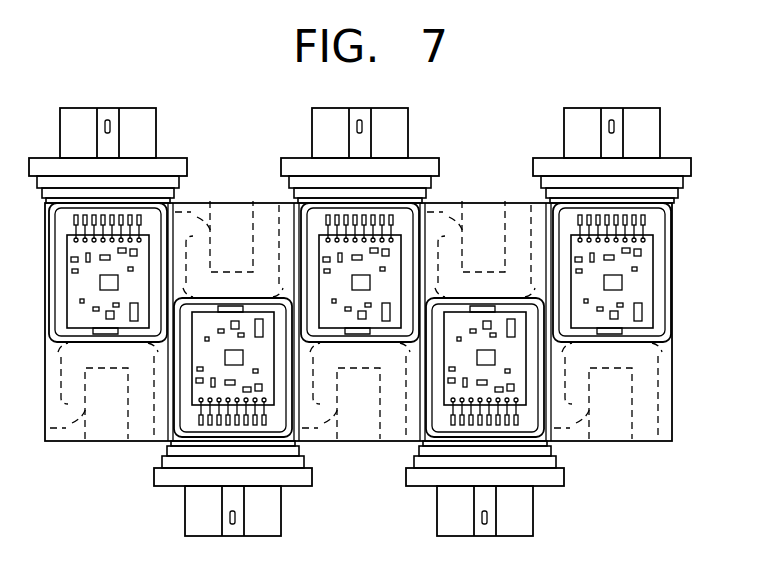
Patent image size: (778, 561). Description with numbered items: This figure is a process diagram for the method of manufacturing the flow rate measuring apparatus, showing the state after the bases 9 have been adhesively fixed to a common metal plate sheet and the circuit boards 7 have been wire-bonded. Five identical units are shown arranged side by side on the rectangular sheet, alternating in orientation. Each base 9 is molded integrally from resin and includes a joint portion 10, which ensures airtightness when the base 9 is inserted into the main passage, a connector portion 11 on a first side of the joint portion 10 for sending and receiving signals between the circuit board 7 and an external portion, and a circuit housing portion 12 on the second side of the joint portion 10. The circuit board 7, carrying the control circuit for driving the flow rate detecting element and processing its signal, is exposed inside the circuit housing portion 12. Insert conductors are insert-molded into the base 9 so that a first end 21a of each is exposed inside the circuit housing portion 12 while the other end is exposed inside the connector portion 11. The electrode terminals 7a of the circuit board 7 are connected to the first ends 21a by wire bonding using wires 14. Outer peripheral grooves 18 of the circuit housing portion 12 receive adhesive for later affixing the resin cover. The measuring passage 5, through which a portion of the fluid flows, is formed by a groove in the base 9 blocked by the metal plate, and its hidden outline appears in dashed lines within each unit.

The measuring passage 5 is at (648, 388).
The circuit board 7 is at (650, 288).
The electrode terminals 7a is at (647, 241).
The base 9 is at (690, 157).
The joint portion 10 is at (541, 188).
The connector portion 11 is at (565, 140).
The circuit housing portion 12 is at (664, 310).
The wires 14 is at (646, 230).
The outer peripheral grooves 18 is at (669, 337).
The first end of insert conductor 21a is at (650, 216).